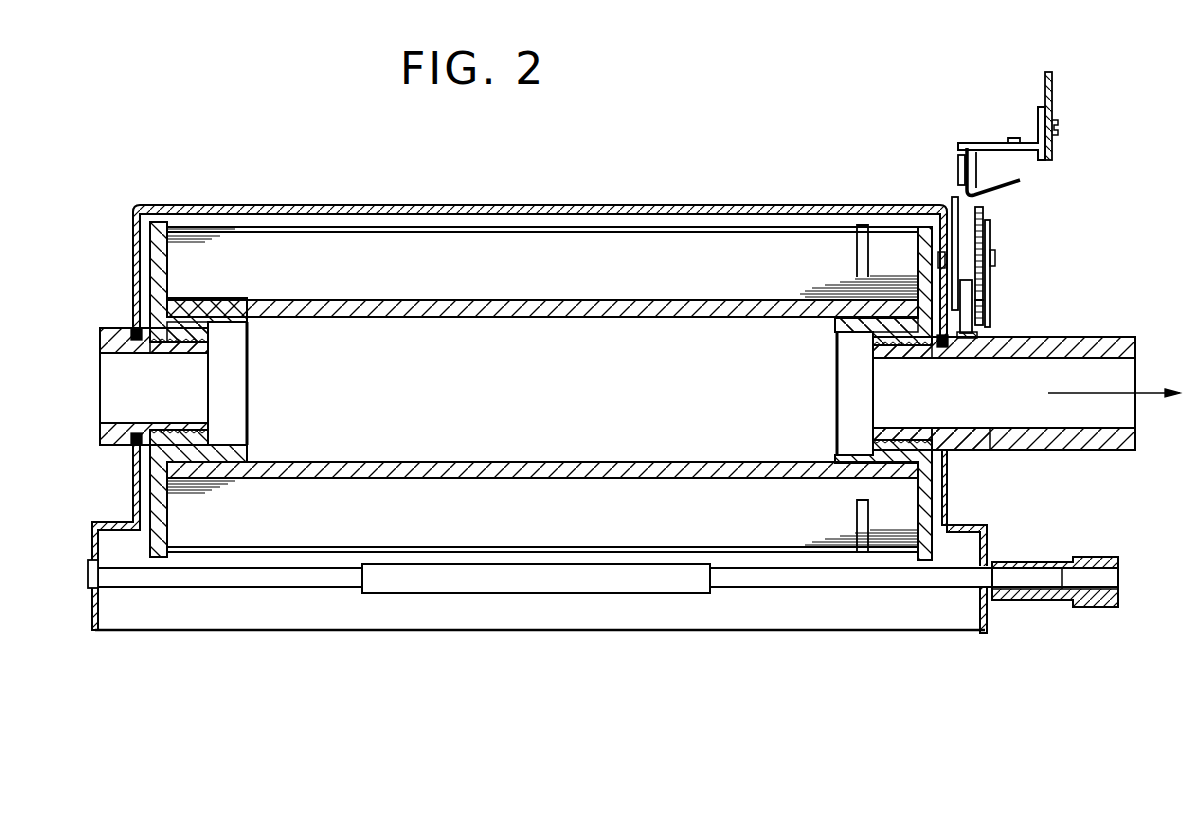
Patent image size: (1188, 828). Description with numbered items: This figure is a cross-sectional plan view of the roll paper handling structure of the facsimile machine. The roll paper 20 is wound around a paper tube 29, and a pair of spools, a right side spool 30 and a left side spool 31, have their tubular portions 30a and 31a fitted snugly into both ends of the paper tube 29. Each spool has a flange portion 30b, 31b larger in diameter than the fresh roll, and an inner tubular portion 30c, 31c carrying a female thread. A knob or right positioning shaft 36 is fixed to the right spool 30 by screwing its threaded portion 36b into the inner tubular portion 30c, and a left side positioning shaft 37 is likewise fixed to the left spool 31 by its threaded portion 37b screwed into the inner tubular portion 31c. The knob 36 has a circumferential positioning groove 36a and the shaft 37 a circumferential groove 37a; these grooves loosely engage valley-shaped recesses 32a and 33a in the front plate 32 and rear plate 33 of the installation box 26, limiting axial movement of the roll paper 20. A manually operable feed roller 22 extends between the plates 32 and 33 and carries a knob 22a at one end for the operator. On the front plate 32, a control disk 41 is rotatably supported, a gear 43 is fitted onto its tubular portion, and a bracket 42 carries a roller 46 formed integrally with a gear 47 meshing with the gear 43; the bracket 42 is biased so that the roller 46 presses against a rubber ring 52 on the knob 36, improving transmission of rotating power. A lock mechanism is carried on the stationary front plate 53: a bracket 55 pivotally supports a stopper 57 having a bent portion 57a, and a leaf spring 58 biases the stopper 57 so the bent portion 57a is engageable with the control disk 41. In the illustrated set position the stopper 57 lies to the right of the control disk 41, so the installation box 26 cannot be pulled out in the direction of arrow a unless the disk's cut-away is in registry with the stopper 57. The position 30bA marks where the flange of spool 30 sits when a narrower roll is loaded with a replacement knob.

The roll paper 20 is at (335, 248).
The feed roller 22 is at (575, 594).
The knob 22a is at (1082, 560).
The installation box 26 is at (526, 206).
The paper tube 29 is at (580, 318).
The right side spool 30 is at (935, 490).
The tubular portion 30a is at (850, 325).
The flange portion 30b is at (925, 516).
The flange portion position 30bA is at (857, 245).
The inner tubular portion 30c is at (837, 360).
The left side spool 31 is at (150, 262).
The tubular portion 31a is at (240, 334).
The flange portion 31b is at (152, 506).
The inner tubular portion 31c is at (210, 340).
The front plate 32 is at (948, 468).
The recess 32a is at (932, 348).
The rear plate 33 is at (135, 476).
The recess 33a is at (133, 444).
The knob 36 is at (1080, 345).
The positioning groove 36a is at (965, 432).
The threaded portion 36b is at (922, 430).
The left side positioning shaft 37 is at (100, 414).
The circumferential groove 37a is at (131, 342).
The threaded portion 37b is at (190, 350).
The control disk 41 is at (953, 205).
The bracket 42 is at (992, 245).
The gear 43 is at (985, 212).
The roller 46 is at (972, 318).
The gear 47 is at (985, 302).
The rubber ring 52 is at (967, 342).
The stationary front plate 53 is at (1050, 95).
The bracket 55 is at (1040, 162).
The stopper 57 is at (958, 165).
The bent portion 57a is at (978, 187).
The leaf spring 58 is at (988, 143).
The arrow a is at (1082, 396).